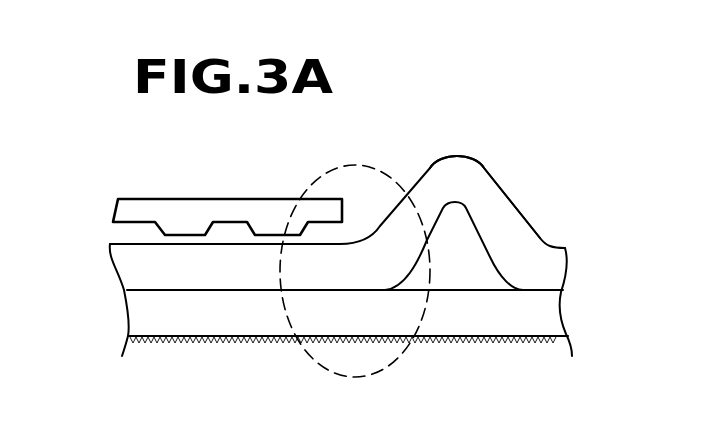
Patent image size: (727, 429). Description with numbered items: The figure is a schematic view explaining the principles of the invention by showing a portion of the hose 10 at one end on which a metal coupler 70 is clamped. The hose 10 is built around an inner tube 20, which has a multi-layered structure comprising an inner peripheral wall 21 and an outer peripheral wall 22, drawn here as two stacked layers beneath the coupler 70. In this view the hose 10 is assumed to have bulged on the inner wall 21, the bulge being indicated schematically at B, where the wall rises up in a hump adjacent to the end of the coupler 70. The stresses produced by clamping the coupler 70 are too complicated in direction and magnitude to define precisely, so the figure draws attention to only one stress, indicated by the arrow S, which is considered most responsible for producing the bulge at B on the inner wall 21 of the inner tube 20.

The hose 10 is at (542, 208).
The inner tube 20 is at (297, 256).
The inner peripheral wall 21 is at (120, 263).
The outer peripheral wall 22 is at (138, 310).
The metal coupler 70 is at (245, 207).
The stress arrow S is at (372, 268).
The bulge B is at (485, 112).